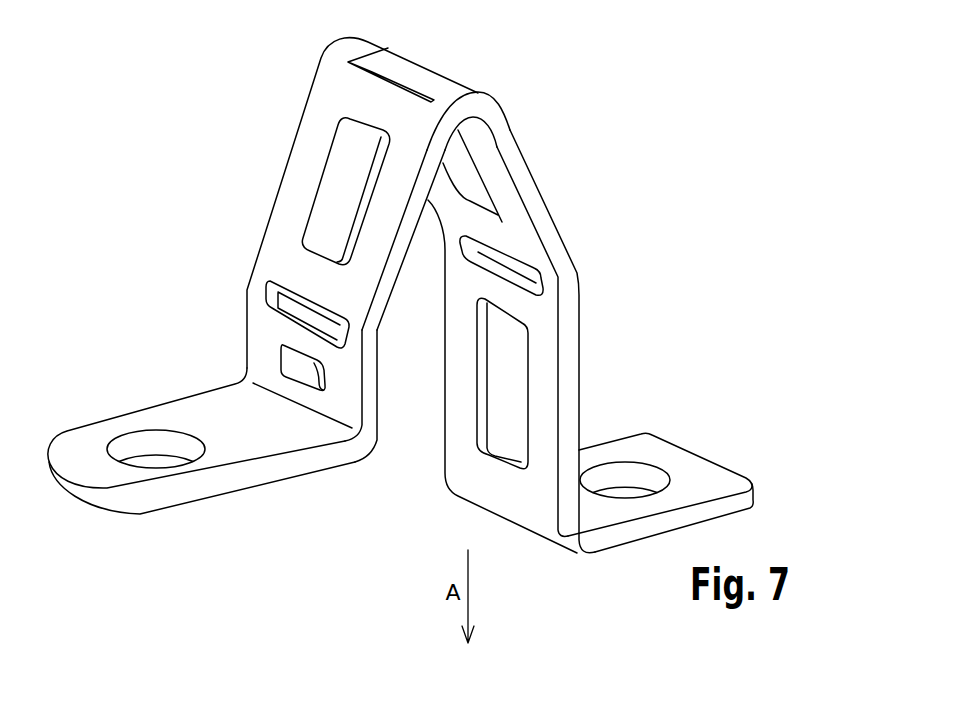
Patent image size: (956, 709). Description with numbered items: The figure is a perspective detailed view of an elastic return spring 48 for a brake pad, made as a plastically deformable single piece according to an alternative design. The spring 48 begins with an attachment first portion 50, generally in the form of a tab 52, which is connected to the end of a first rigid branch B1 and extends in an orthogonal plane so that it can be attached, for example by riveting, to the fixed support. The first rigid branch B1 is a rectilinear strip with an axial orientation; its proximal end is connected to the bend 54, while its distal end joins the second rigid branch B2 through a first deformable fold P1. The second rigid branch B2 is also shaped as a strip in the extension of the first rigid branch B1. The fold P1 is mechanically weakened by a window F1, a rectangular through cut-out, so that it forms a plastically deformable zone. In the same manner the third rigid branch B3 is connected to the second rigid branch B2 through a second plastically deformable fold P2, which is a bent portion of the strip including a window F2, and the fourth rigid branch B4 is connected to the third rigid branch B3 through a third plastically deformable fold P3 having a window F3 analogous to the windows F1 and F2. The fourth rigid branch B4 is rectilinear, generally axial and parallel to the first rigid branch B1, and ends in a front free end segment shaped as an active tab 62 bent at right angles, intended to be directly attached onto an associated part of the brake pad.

The elastic return spring 48 is at (343, 93).
The first deformable fold P1 is at (247, 290).
The second plastically deformable fold P2 is at (473, 109).
The third plastically deformable fold P3 is at (570, 283).
The first rigid branch B1 is at (270, 335).
The second rigid branch B2 is at (320, 273).
The third rigid branch B3 is at (505, 238).
The fourth rigid branch B4 is at (543, 397).
The window F1 is at (320, 330).
The window F2 is at (427, 82).
The window F3 is at (508, 273).
The attachment first portion 50 is at (224, 430).
The tab 52 is at (82, 463).
The bend 54 is at (362, 440).
The active tab 62 is at (697, 478).